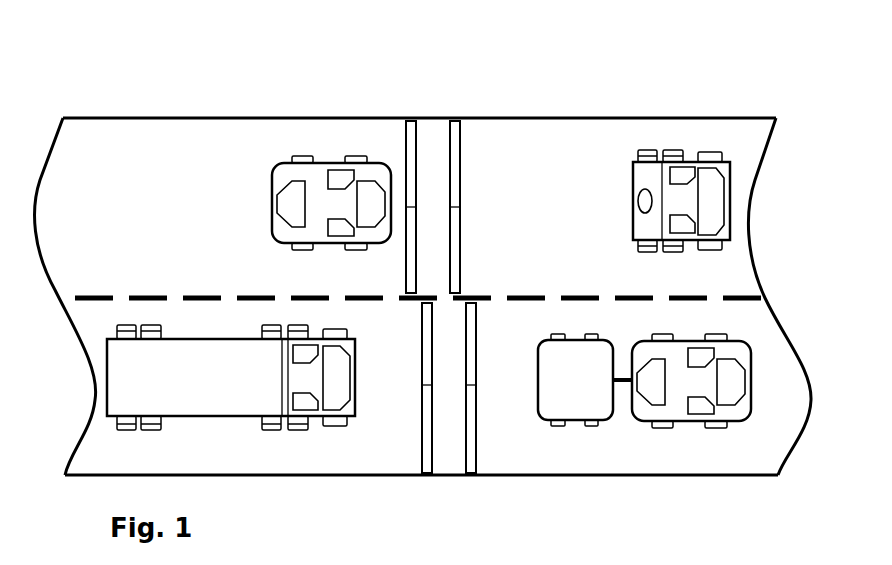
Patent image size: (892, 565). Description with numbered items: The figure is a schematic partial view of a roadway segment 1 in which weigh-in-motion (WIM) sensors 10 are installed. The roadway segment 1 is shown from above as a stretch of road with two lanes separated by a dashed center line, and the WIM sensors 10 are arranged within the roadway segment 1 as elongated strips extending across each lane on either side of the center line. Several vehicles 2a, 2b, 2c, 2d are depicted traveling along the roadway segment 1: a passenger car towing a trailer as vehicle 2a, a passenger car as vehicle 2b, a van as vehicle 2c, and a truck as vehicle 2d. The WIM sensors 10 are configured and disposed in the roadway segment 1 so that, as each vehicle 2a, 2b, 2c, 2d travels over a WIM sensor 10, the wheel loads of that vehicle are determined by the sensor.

The roadway segment 1 is at (600, 494).
The WIM sensor 10 is at (411, 143).
The vehicle 2a is at (708, 439).
The vehicle 2b is at (315, 138).
The vehicle 2c is at (707, 143).
The vehicle 2d is at (303, 455).